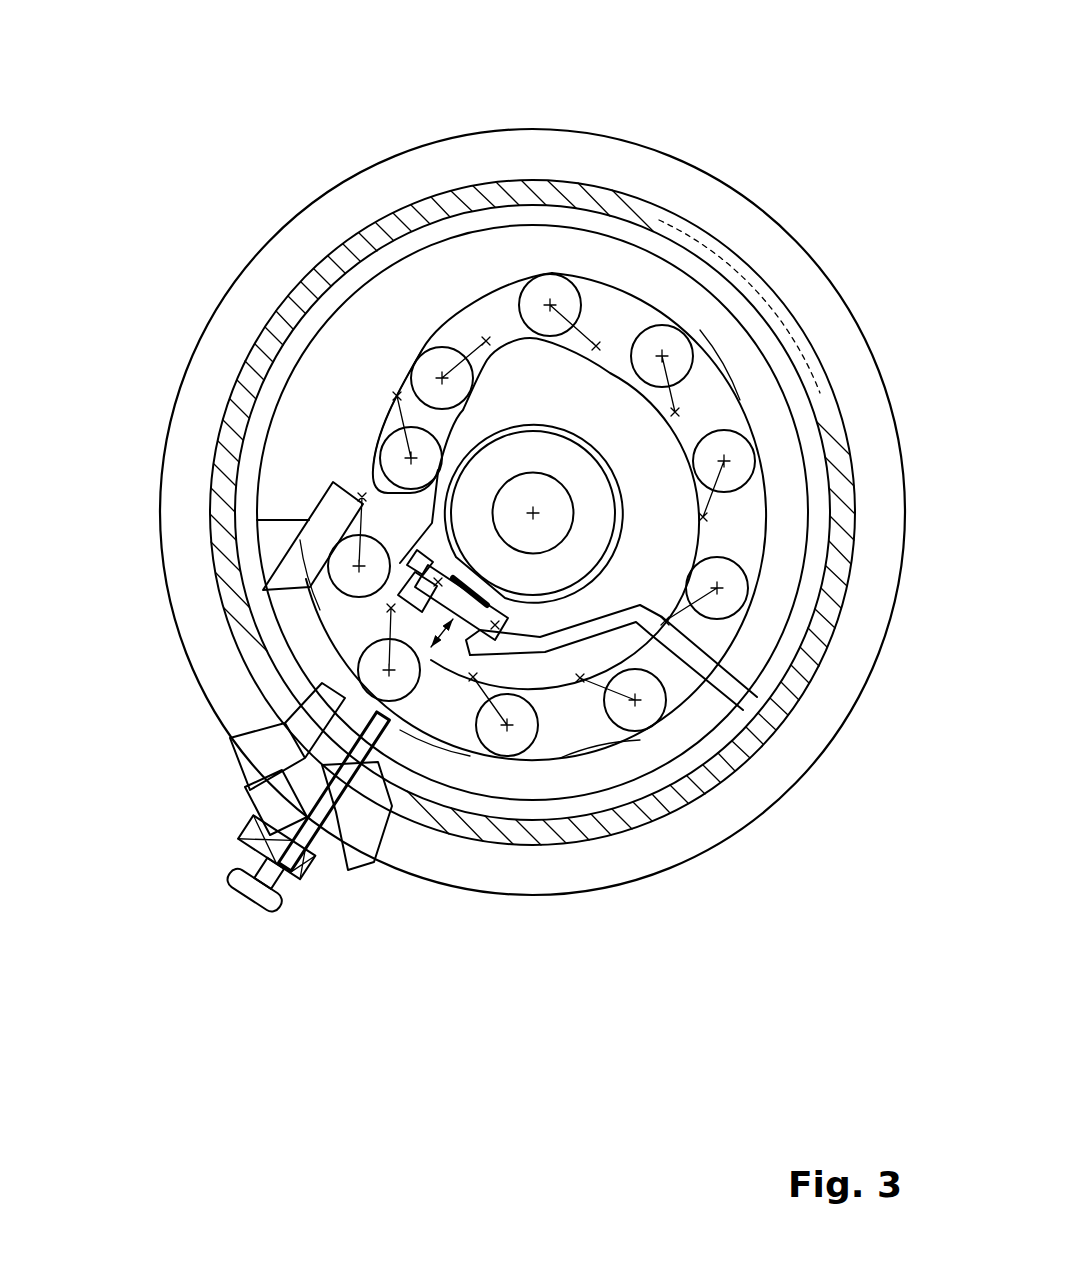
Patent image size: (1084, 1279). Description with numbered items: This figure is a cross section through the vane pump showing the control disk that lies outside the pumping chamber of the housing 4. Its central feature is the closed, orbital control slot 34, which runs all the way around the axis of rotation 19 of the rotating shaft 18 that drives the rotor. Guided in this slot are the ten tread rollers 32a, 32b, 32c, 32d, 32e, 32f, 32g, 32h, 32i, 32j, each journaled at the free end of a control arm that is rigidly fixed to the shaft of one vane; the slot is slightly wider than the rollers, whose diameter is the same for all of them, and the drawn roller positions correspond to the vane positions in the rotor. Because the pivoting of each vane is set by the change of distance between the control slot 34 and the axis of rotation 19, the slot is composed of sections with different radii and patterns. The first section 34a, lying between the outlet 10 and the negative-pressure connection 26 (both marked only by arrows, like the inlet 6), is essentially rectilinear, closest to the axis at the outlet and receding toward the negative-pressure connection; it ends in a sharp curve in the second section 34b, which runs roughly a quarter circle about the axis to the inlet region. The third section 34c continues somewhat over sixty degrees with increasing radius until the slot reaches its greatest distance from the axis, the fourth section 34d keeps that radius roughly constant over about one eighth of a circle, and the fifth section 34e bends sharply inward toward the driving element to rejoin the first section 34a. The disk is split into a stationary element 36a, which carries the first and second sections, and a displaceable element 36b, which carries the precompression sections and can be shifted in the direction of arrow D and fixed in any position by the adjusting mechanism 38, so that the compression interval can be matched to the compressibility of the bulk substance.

The housing 4 is at (590, 148).
The inlet 6 is at (901, 628).
The outlet 10 is at (150, 545).
The rotating shaft 18 is at (535, 480).
The axis of rotation 19 is at (537, 512).
The negative-pressure connection 26 is at (553, 112).
The tread roller 32a is at (397, 447).
The tread roller 32b is at (421, 355).
The tread roller 32c is at (537, 282).
The tread roller 32d is at (660, 337).
The tread roller 32e is at (737, 437).
The tread roller 32f is at (745, 605).
The tread roller 32g is at (668, 712).
The tread roller 32h is at (518, 756).
The tread roller 32i is at (363, 663).
The tread roller 32j is at (325, 588).
The control slot 34 is at (470, 305).
The first section of the control slot 34a is at (395, 395).
The second section of the control slot 34b is at (700, 377).
The third section of the control slot 34c is at (602, 752).
The fourth section of the control slot 34d is at (437, 715).
The fifth section of the control slot 34e is at (327, 578).
The stationary element 36a is at (303, 413).
The displaceable element 36b is at (708, 718).
The adjusting mechanism 38 is at (327, 867).
The direction of displacement D is at (442, 631).